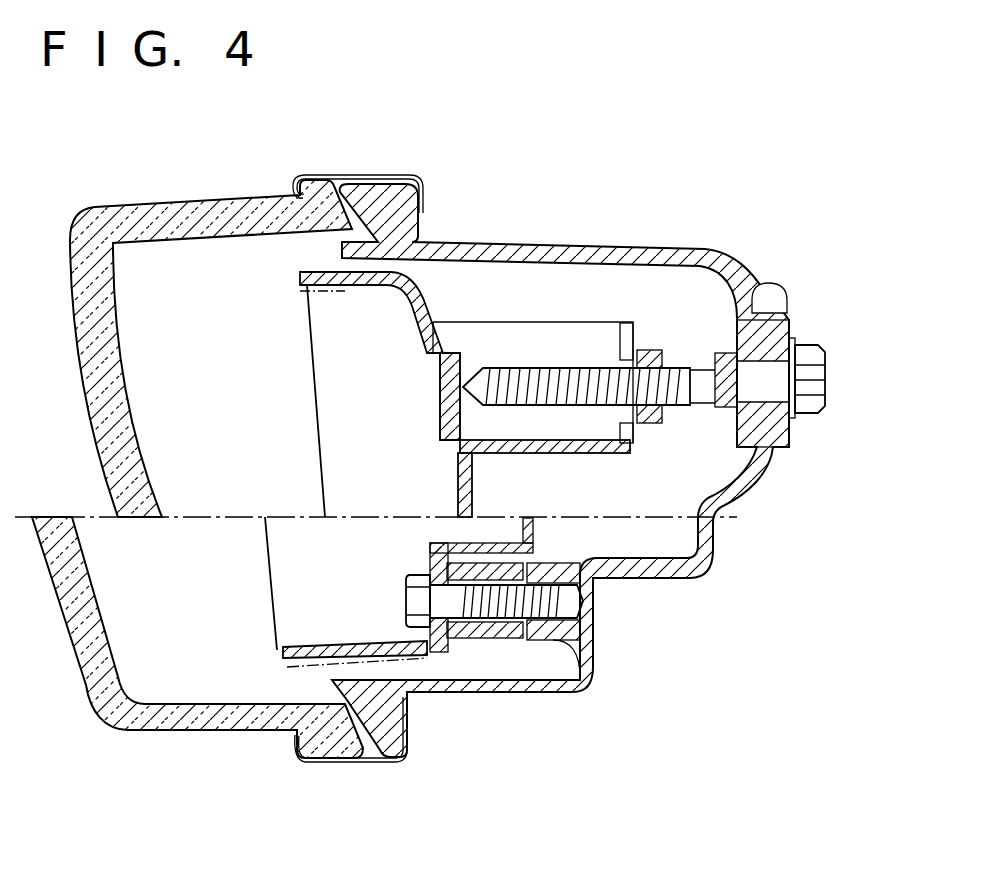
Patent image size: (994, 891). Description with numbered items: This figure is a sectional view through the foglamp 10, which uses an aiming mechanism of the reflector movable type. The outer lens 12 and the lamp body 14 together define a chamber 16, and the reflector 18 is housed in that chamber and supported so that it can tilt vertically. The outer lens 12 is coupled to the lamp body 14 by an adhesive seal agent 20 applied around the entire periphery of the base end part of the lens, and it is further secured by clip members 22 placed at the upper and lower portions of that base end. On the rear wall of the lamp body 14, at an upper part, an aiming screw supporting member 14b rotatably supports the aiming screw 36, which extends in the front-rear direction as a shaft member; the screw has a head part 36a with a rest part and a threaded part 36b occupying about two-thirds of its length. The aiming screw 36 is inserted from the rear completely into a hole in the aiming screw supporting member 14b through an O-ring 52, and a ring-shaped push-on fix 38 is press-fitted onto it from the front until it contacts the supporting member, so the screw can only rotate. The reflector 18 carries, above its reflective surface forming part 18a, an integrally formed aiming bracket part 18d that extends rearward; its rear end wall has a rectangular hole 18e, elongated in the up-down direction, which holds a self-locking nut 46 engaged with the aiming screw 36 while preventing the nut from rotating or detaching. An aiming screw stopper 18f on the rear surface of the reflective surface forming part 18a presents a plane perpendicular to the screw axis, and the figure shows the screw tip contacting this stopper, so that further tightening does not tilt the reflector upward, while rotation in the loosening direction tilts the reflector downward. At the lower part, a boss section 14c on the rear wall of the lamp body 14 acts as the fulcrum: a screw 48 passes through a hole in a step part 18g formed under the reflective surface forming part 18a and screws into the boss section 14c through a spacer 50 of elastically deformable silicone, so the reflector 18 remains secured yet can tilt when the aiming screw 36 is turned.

The foglamp 10 is at (650, 229).
The outer lens 12 is at (93, 428).
The lamp body 14 is at (738, 503).
The aiming screw supporting member 14b is at (795, 452).
The boss section 14c is at (553, 660).
The chamber 16 is at (238, 405).
The reflector 18 is at (313, 454).
The reflective surface forming part 18a is at (473, 497).
The aiming bracket part 18d is at (607, 442).
The rectangular hole 18e is at (622, 342).
The aiming screw stopper 18f is at (473, 353).
The step part 18g is at (430, 550).
The adhesive seal agent 20 is at (395, 178).
The clip member 22 is at (380, 173).
The aiming screw 36 is at (833, 406).
The head part 36a is at (819, 345).
The threaded part 36b is at (575, 374).
The push-on fix 38 is at (728, 356).
The self-locking nut 46 is at (650, 350).
The screw 48 is at (407, 597).
The spacer 50 is at (466, 640).
The O-ring 52 is at (783, 312).